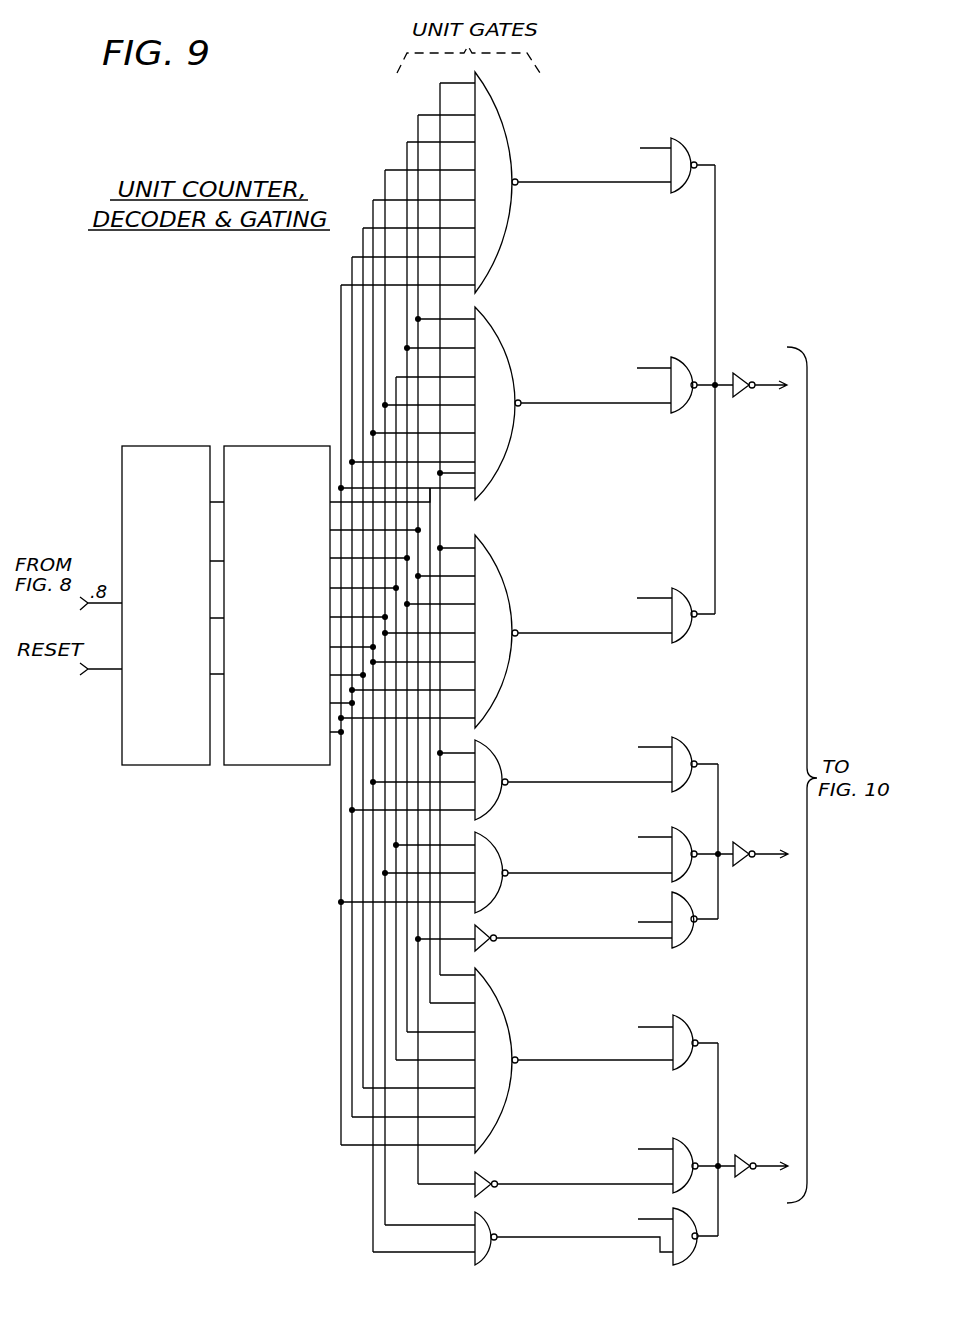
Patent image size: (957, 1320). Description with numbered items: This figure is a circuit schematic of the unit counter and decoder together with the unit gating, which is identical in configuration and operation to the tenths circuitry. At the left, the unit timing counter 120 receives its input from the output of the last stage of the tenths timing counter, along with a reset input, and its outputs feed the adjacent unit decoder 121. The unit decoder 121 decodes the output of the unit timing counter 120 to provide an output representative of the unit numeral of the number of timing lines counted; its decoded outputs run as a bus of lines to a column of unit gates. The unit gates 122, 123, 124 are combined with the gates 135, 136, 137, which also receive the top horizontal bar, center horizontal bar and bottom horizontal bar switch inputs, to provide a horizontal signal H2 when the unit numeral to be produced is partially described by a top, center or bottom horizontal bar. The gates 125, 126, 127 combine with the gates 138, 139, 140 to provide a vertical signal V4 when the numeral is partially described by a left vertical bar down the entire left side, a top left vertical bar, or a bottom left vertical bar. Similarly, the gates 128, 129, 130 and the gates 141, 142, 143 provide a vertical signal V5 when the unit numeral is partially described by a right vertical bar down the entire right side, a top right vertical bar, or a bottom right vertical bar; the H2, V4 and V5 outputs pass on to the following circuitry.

The unit timing counter 120 is at (165, 443).
The unit decoder 121 is at (275, 443).
The unit gate 122 is at (497, 108).
The unit gate 123 is at (493, 317).
The unit gate 124 is at (492, 555).
The gate 125 is at (490, 752).
The gate 126 is at (493, 857).
The gate 127 is at (483, 947).
The gate 128 is at (508, 1082).
The gate 129 is at (483, 1173).
The gate 130 is at (487, 1257).
The gate 135 is at (687, 143).
The gate 136 is at (682, 408).
The gate 137 is at (692, 632).
The gate 138 is at (687, 740).
The gate 139 is at (687, 833).
The gate 140 is at (690, 935).
The gate 141 is at (690, 1027).
The gate 142 is at (687, 1138).
The gate 143 is at (693, 1252).